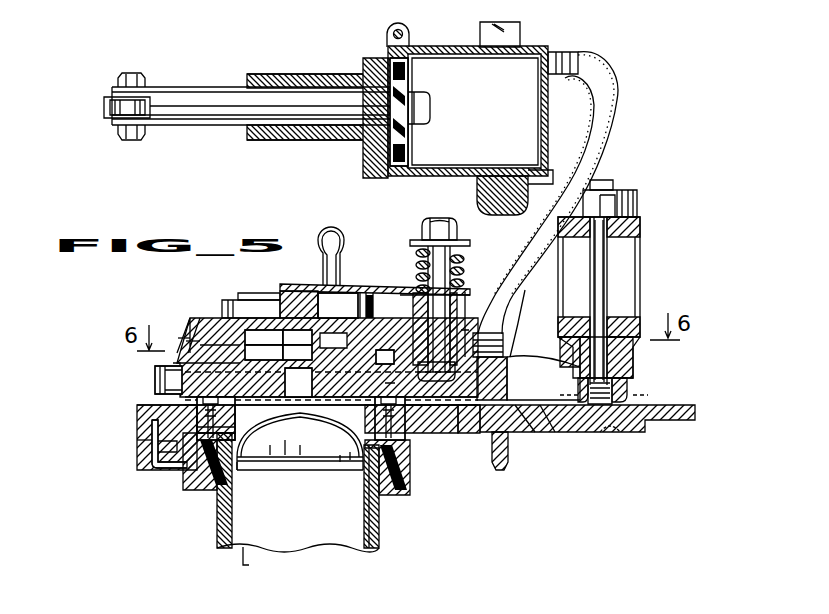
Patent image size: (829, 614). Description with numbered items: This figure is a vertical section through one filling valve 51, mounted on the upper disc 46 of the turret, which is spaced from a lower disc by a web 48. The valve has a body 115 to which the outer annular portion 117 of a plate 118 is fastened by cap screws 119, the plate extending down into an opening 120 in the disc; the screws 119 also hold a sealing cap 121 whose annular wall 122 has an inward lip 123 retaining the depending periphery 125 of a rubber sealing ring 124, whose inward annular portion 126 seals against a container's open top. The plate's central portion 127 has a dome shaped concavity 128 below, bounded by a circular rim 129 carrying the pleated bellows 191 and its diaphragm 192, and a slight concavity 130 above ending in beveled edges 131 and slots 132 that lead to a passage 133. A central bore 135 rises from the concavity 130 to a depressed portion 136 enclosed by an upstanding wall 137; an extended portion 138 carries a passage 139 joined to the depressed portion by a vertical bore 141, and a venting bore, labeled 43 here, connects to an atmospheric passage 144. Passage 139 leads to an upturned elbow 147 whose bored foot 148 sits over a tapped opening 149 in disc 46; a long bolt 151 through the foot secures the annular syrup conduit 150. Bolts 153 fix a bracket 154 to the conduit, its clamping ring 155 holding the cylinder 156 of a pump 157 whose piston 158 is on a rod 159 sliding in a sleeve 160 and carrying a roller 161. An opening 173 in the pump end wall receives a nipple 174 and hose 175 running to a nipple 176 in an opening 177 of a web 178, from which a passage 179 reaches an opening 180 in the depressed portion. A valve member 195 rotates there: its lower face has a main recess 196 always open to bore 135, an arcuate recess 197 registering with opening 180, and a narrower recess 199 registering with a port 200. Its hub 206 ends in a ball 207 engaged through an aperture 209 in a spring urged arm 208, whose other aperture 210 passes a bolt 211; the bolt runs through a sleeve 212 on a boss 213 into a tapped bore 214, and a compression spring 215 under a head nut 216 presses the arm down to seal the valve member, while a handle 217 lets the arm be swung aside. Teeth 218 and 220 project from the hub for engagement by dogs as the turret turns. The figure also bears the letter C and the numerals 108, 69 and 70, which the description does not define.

The roller 161 is at (108, 103).
The rod 159 is at (188, 88).
The sleeve 160 is at (296, 132).
The clamping ring 155 is at (538, 44).
The piston 158 is at (410, 160).
The opening 173 is at (540, 66).
The pump 157 is at (385, 44).
The cylinder 156 is at (413, 47).
The nipple 174 is at (578, 62).
The hose 175 is at (607, 82).
The bolts 153 is at (613, 185).
The bracket 154 is at (638, 203).
The annular conduit 150 is at (627, 256).
The long bolt 151 is at (607, 285).
The opening 177 is at (556, 335).
The upturned elbow 147 is at (626, 380).
The bored foot 148 is at (642, 403).
The upper disc 46 is at (698, 421).
The tapped opening 149 is at (652, 430).
The passage 139 is at (553, 430).
The web 178 is at (530, 426).
The web 48 is at (500, 470).
The passage 179 is at (467, 434).
The body 115 is at (182, 345).
The tooth 218 is at (222, 312).
The valve member 195 is at (190, 345).
The depressed portion 136 is at (186, 341).
The upstanding annular wall 137 is at (178, 338).
The filling valve 51 is at (163, 362).
The passage 144 is at (152, 382).
The narrower arcuate recess 199 is at (264, 337).
The port 200 is at (264, 352).
The chamber 43 is at (297, 337).
The main recess 196 is at (297, 352).
The vertical bore 141 is at (333, 340).
The central bore 135 is at (298, 382).
The slight concavity 130 is at (296, 408).
The arcuate recess 197 is at (385, 356).
The opening 180 is at (355, 345).
The aperture 209 is at (288, 284).
The aperture 210 is at (420, 287).
The spring urged arm 208 is at (305, 288).
The ball shaped end 207 is at (282, 296).
The hub portion 206 is at (262, 305).
The handle 217 is at (320, 240).
The head nut 216 is at (420, 229).
The compression spring 215 is at (462, 250).
The tooth 220 is at (352, 300).
The bolt 211 is at (434, 270).
The sleeve 212 is at (420, 305).
The boss formation 213 is at (443, 370).
The tapped bore 214 is at (467, 320).
The nipple 176 is at (500, 338).
The extended portion 138 is at (527, 368).
The outer annular portion 117 is at (186, 419).
The depending periphery 125 is at (183, 475).
The circular rim 129 is at (160, 442).
The opening 120 is at (188, 412).
The cap screws 119 is at (193, 433).
The rubber sealing ring 124 is at (174, 455).
The sealing cap 121 is at (178, 457).
The cylinder wall 108 is at (223, 548).
The sleeve 69 is at (373, 550).
The wall 70 is at (383, 497).
The inwardly extending lip 123 is at (404, 495).
The annular wall 122 is at (405, 478).
The passage 133 is at (402, 452).
The plate 118 is at (303, 430).
The central portion 127 is at (292, 425).
The bellows 191 is at (237, 462).
The diaphragm 192 is at (272, 445).
The dome shaped concavity 128 is at (288, 440).
The beveled edges 131 is at (300, 445).
The slots 132 is at (342, 458).
The inwardly extending annular portion 126 is at (350, 455).
The center line C is at (252, 561).